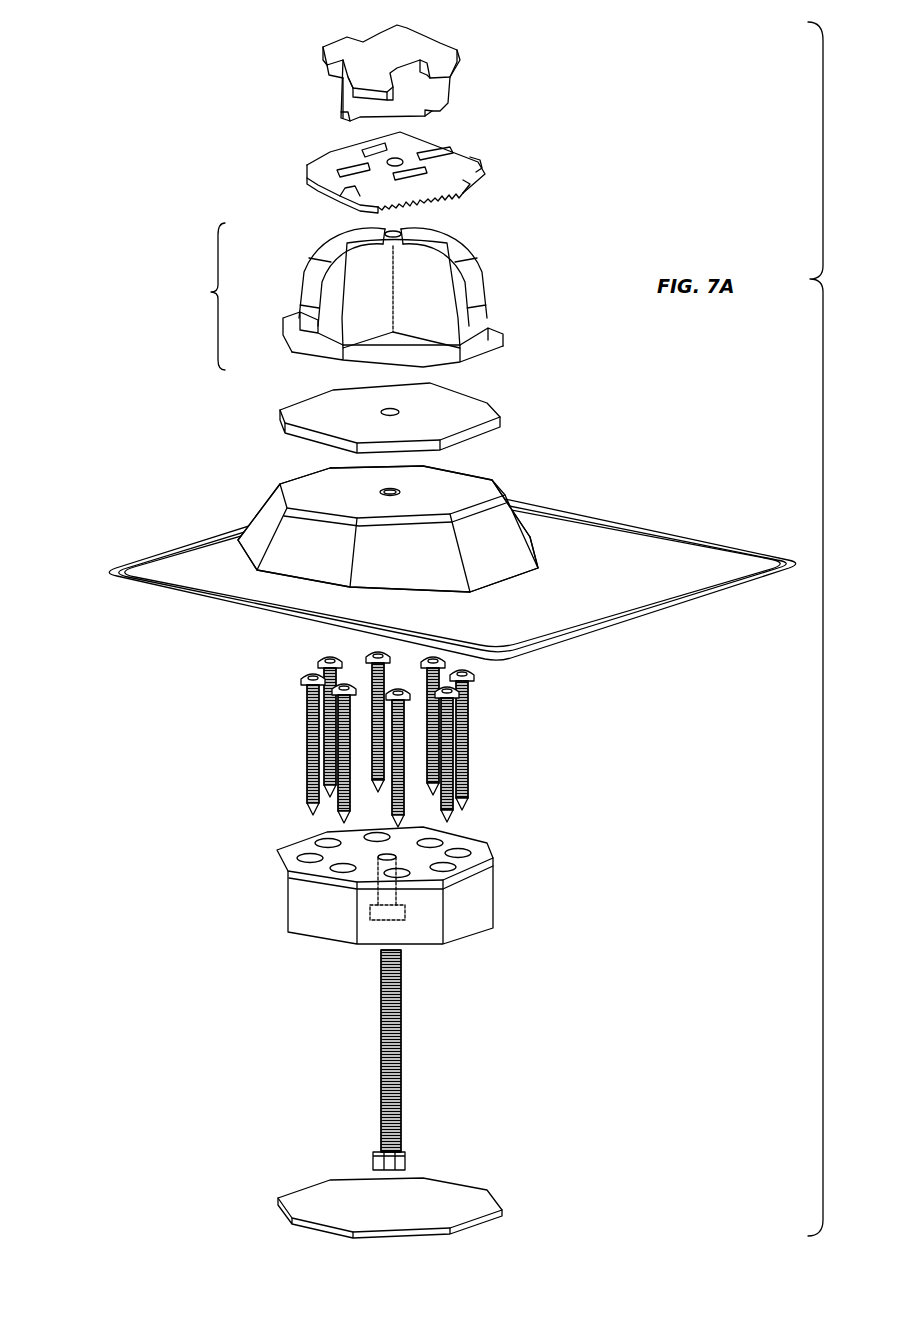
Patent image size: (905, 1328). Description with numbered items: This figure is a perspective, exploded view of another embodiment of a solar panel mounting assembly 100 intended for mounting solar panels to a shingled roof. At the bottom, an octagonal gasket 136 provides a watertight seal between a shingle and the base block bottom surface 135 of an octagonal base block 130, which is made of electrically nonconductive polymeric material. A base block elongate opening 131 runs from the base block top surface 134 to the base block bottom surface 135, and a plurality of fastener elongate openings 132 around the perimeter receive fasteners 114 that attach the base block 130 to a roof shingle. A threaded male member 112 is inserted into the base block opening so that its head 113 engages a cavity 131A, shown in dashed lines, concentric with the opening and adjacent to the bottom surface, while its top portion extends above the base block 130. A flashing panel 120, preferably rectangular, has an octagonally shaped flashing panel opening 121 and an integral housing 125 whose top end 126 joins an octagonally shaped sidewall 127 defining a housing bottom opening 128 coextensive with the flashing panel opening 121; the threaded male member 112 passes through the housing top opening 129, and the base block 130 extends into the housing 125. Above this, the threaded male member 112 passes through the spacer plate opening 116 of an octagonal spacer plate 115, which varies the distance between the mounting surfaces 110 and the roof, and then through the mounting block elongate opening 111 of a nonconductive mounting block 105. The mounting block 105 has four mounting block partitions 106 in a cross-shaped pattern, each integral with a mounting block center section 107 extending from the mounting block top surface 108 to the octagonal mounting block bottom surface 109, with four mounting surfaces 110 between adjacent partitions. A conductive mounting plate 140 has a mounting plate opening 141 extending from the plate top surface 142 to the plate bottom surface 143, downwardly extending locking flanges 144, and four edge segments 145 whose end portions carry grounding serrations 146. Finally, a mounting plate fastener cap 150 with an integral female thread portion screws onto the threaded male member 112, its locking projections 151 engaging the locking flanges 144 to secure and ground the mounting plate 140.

The solar panel mounting assembly 100 is at (192, 54).
The mounting block 105 is at (365, 297).
The mounting block partitions 106 is at (333, 248).
The mounting block center section 107 is at (380, 318).
The mounting block top surface 108 is at (357, 231).
The mounting block bottom surface 109 is at (412, 366).
The mounting surfaces 110 is at (295, 318).
The mounting block elongate opening 111 is at (404, 235).
The threaded male member 112 is at (380, 1033).
The head 113 is at (373, 1162).
The fasteners 114 is at (307, 800).
The spacer plate 115 is at (388, 412).
The spacer plate opening 116 is at (398, 412).
The flashing panel 120 is at (452, 577).
The flashing panel opening 121 is at (288, 580).
The housing 125 is at (442, 554).
The top end 126 is at (453, 473).
The sidewall 127 is at (503, 558).
The housing bottom opening 128 is at (496, 590).
The housing top opening 129 is at (384, 488).
The base block 130 is at (387, 889).
The base block elongate opening 131 is at (410, 855).
The cavity 131A is at (380, 918).
The fastener elongate openings 132 is at (298, 857).
The base block top surface 134 is at (487, 858).
The base block bottom surface 135 is at (293, 930).
The gasket 136 is at (335, 1198).
The mounting plate 140 is at (393, 172).
The mounting plate opening 141 is at (372, 158).
The plate top surface 142 is at (412, 147).
The plate bottom surface 143 is at (338, 191).
The locking flanges 144 is at (478, 161).
The edge segments 145 is at (470, 190).
The grounding serrations 146 is at (467, 210).
The mounting plate fastener cap 150 is at (337, 96).
The locking projections 151 is at (340, 113).